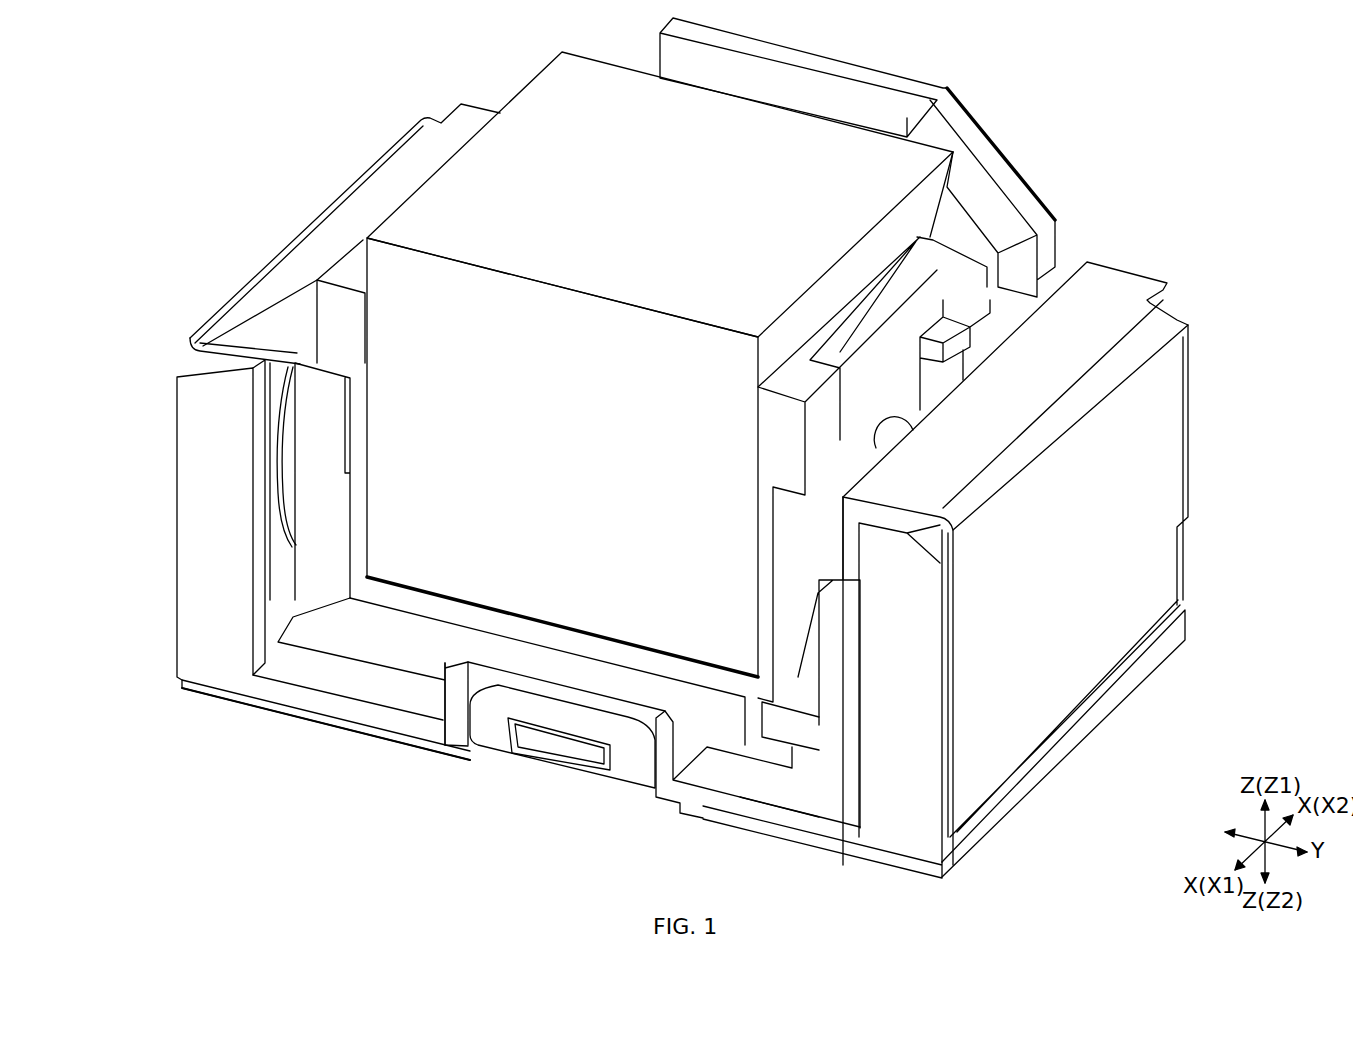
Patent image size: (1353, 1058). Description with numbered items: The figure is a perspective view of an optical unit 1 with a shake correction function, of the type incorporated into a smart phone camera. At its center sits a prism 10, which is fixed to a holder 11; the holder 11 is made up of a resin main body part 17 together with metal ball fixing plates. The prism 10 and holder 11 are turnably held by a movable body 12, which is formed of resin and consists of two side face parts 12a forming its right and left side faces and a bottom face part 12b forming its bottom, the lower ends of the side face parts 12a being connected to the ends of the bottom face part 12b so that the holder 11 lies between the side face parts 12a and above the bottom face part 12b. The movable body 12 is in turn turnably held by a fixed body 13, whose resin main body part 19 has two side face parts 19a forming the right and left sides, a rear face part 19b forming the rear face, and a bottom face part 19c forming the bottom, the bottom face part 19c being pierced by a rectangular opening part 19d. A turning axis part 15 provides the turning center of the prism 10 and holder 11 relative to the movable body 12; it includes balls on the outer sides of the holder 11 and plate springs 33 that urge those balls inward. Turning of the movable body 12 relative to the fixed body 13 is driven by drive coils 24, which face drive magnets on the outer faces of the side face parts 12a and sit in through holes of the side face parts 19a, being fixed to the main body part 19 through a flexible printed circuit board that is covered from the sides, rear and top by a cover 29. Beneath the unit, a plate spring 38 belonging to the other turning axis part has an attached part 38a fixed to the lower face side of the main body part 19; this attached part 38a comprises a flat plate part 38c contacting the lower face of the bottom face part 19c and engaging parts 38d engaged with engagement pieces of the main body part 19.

The optical unit with a shake correction function 1 is at (1145, 76).
The prism 10 is at (534, 80).
The holder 11 is at (333, 257).
The main body part 17 is at (314, 275).
The cover 29 is at (420, 118).
The rear face part 19b is at (997, 142).
The plate spring 33 is at (890, 305).
The turning axis part 15 is at (908, 445).
The fixed body 13 is at (177, 535).
The main body part 19 is at (277, 631).
The side face part 19a is at (177, 430).
The drive coil 24 is at (277, 432).
The side face part 12a is at (292, 585).
The engaging part 38d is at (553, 697).
The plate spring 38 is at (277, 712).
The attached part 38a is at (858, 858).
The flat plate part 38c is at (996, 762).
The opening part 19d is at (384, 663).
The bottom face part 19c is at (703, 817).
The movable body 12 is at (790, 747).
The bottom face part 12b is at (571, 743).